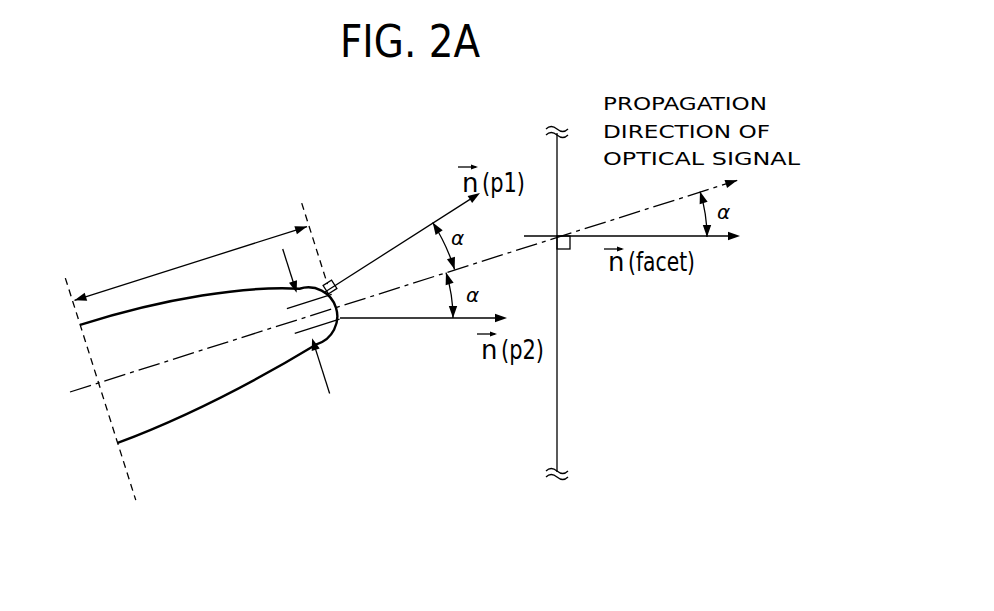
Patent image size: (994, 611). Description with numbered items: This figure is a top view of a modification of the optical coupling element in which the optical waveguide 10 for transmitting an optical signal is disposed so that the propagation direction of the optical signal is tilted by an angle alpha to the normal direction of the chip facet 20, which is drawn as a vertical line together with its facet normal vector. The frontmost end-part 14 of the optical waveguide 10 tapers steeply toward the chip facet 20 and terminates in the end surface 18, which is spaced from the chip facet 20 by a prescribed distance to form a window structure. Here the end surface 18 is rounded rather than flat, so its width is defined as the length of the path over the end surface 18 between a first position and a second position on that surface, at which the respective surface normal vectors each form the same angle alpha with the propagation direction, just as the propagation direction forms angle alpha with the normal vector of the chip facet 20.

The optical waveguide 10 is at (190, 413).
The frontmost end-part 14 is at (192, 261).
The end surface 18 is at (339, 279).
The chip facet 20 is at (560, 437).